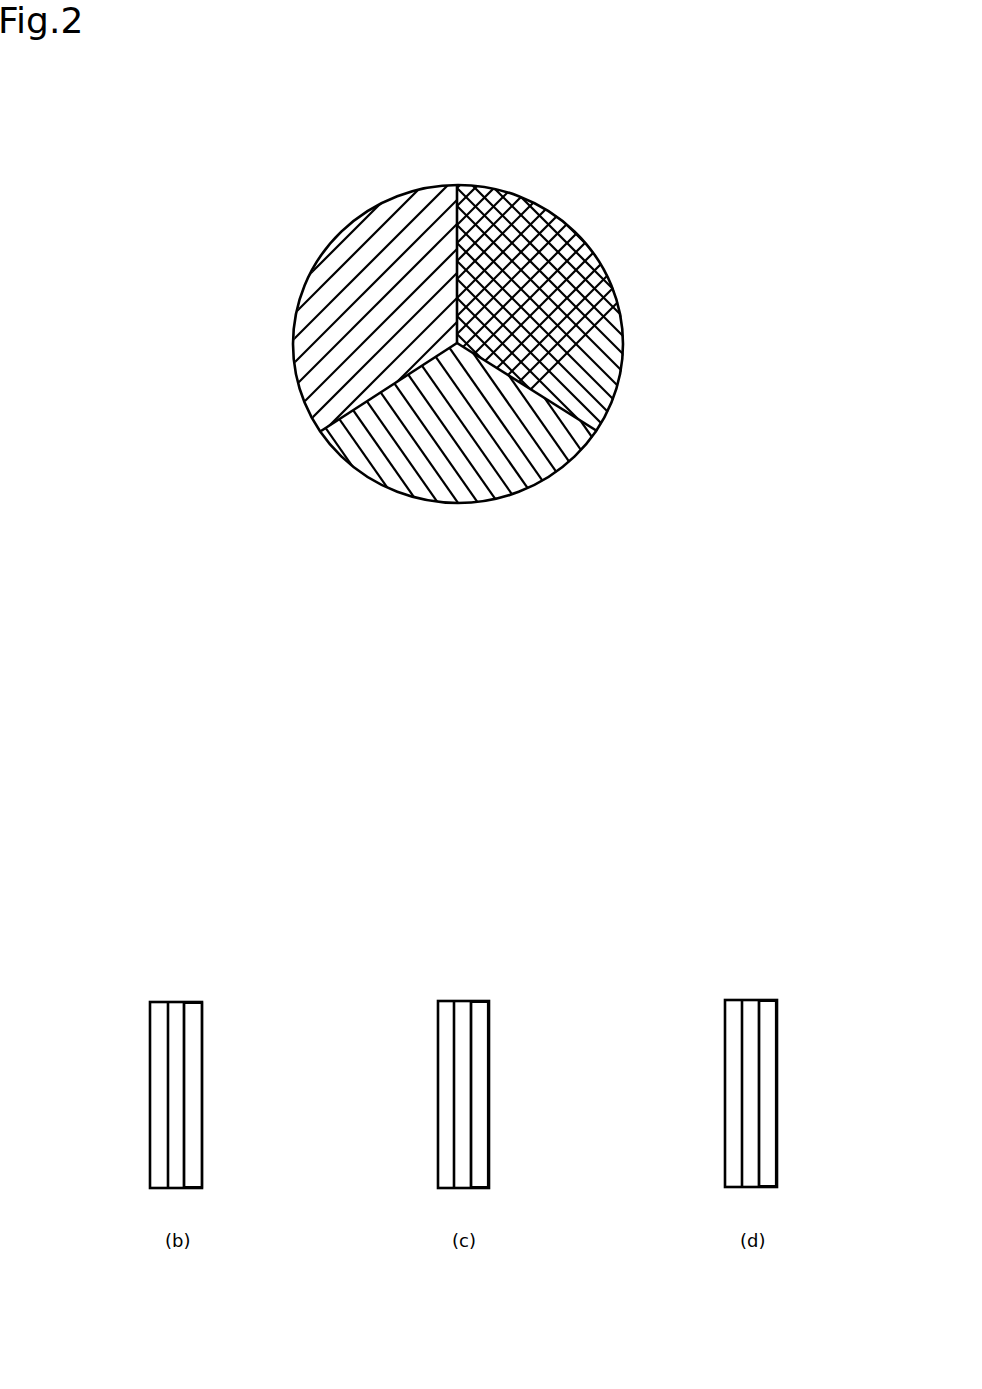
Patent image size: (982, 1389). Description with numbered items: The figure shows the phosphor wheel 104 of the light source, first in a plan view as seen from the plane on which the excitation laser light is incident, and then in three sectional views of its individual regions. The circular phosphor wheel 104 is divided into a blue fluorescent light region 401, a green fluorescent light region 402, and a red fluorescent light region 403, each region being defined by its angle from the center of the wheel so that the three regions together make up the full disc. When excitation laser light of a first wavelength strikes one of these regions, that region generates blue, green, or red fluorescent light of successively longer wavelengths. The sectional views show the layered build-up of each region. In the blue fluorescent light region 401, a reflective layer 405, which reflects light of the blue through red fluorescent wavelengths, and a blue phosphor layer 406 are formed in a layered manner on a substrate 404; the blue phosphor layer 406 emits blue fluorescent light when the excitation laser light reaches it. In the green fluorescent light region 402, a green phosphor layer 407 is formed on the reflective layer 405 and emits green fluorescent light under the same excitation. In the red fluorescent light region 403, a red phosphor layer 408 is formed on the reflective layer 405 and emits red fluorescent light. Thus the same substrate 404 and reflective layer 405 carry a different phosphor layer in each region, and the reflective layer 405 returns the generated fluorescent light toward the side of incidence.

The phosphor wheel 104 is at (442, 144).
The blue fluorescent light region 401 is at (318, 260).
The green fluorescent light region 402 is at (390, 493).
The red fluorescent light region 403 is at (621, 312).
The substrate 404 is at (193, 1002).
The reflective layer 405 is at (176, 1002).
The blue phosphor layer 406 is at (150, 1035).
The green phosphor layer 407 is at (438, 1035).
The red phosphor layer 408 is at (725, 1035).